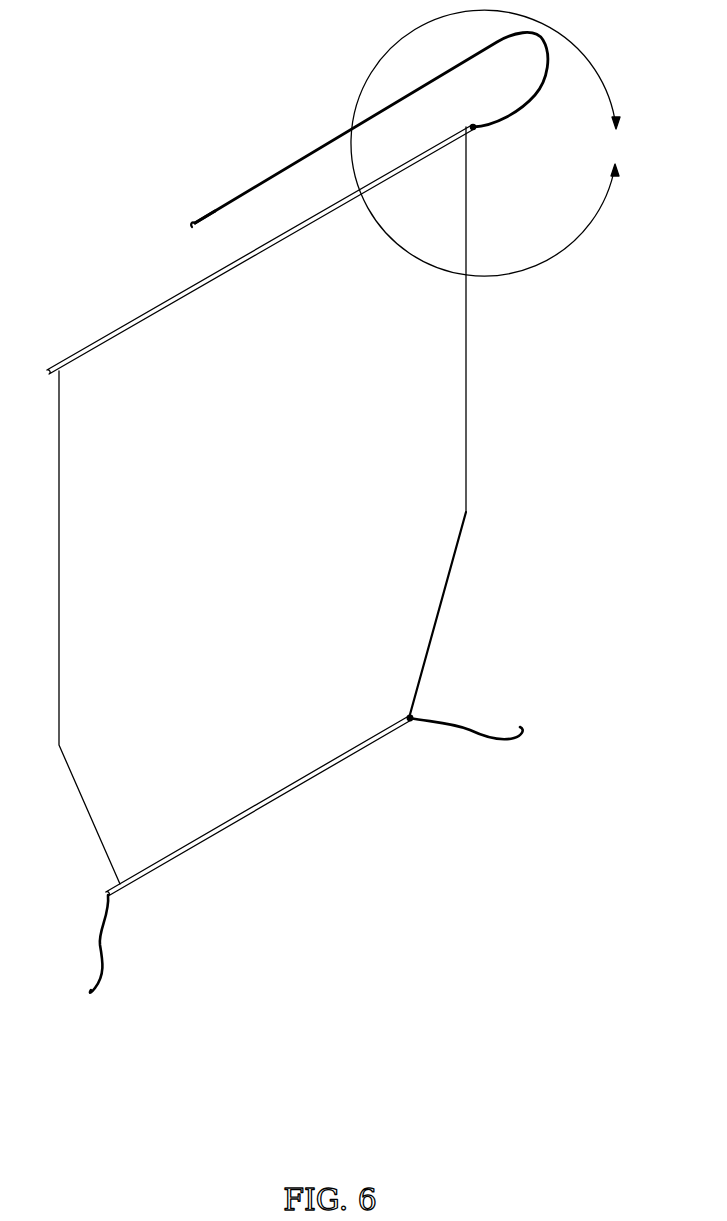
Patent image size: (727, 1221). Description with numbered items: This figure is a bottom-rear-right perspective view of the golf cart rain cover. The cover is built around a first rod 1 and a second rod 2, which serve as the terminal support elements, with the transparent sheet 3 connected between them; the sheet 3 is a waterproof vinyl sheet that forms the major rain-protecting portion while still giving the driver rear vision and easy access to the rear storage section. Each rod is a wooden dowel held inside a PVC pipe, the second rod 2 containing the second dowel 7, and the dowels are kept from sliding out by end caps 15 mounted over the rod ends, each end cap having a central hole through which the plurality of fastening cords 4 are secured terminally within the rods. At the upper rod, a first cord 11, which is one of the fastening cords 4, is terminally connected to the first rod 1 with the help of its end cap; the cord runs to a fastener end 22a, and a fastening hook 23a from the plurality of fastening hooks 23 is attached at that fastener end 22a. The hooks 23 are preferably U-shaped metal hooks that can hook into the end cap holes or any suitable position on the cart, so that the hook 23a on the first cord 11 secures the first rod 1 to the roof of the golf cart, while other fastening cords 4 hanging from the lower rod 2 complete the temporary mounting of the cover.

The first rod 1 is at (112, 331).
The second rod 2 is at (203, 847).
The transparent sheet 3 is at (425, 623).
The fastening cords 4 is at (490, 740).
The first cord 11 is at (297, 160).
The second dowel 7 is at (487, 143).
The end caps 15 is at (413, 721).
The fastener end 22a is at (200, 215).
The fastening hooks 23 is at (90, 993).
The fastening hook 23a is at (195, 223).